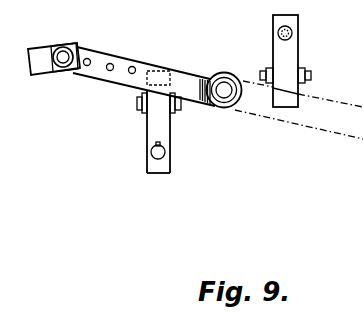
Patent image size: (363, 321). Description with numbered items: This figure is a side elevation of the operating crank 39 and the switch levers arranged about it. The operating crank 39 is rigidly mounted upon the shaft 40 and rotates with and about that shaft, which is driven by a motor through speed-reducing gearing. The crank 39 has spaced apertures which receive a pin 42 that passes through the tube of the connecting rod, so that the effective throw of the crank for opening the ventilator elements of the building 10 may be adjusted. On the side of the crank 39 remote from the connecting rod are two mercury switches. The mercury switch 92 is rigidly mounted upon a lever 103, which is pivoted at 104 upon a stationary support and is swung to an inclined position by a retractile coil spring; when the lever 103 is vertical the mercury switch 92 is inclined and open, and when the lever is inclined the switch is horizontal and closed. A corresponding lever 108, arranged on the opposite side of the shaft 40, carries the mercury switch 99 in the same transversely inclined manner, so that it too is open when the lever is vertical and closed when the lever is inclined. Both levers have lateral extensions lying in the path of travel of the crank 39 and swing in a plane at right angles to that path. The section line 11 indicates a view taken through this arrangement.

The building 10 is at (160, 53).
The section line 11- 11 is at (288, 0).
The operating crank 39 is at (122, 77).
The shaft 40 is at (223, 87).
The pin 42 is at (67, 49).
The mercury switch 92 is at (292, 33).
The mercury switch 99 is at (151, 154).
The lever 103 is at (292, 53).
The pivot 104 is at (307, 77).
The lever 108 is at (167, 145).